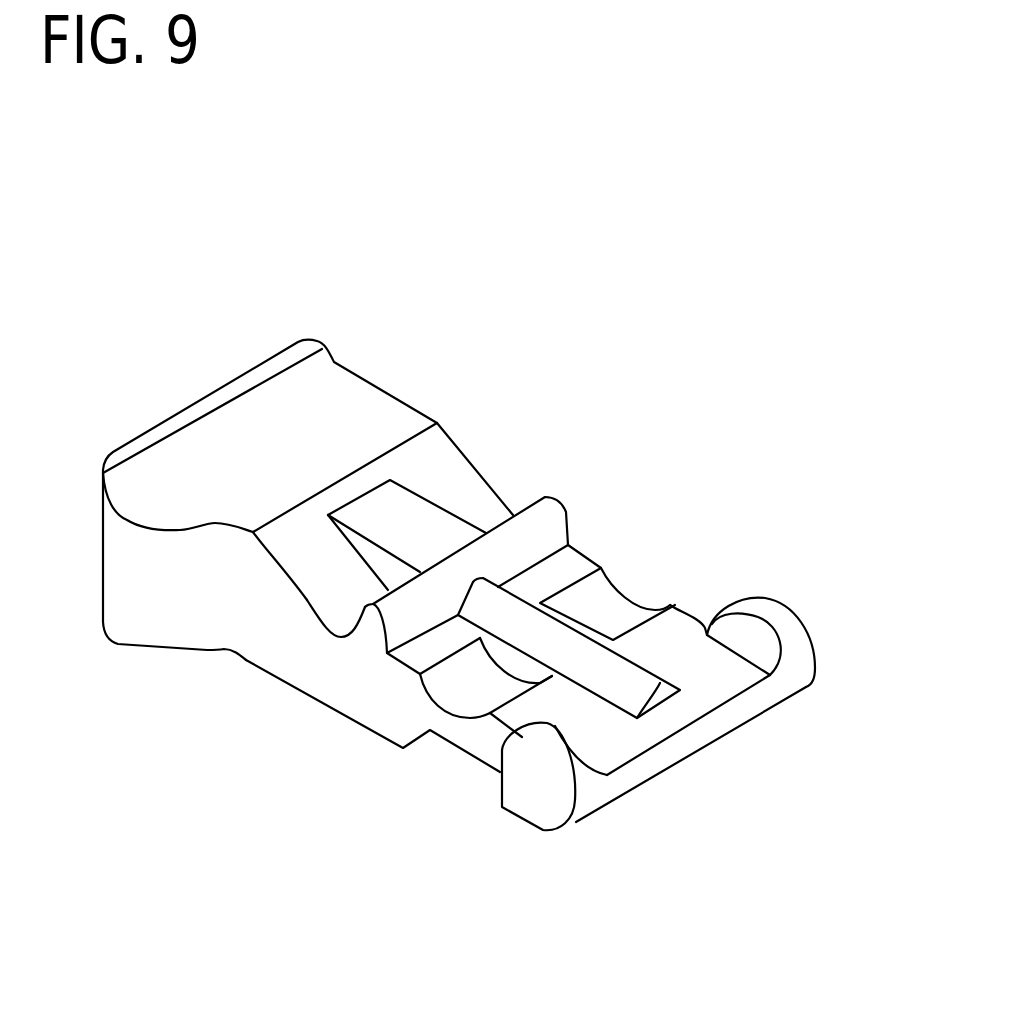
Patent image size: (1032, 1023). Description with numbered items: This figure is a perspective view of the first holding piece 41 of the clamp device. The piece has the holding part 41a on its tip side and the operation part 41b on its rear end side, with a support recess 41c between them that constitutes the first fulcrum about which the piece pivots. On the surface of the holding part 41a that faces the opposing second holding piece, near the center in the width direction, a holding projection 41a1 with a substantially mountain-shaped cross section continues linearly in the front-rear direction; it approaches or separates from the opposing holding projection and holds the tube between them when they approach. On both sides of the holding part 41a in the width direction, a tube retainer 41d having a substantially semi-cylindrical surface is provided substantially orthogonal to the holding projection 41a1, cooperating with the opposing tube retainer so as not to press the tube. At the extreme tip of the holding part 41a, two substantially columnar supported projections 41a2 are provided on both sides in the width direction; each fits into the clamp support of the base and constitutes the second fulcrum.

The first holding piece 41 is at (332, 390).
The holding part 41a is at (540, 792).
The holding projection 41a1 is at (553, 625).
The supported projection 41a2 is at (771, 611).
The operation part 41b is at (252, 453).
The support recess 41c is at (348, 624).
The tube retainer 41d is at (473, 687).